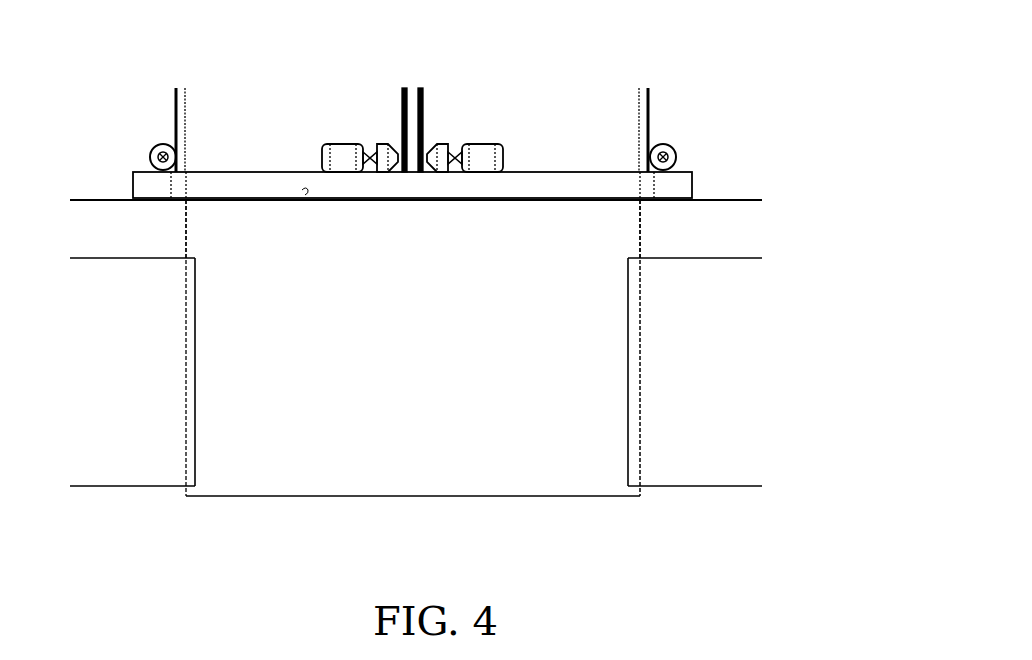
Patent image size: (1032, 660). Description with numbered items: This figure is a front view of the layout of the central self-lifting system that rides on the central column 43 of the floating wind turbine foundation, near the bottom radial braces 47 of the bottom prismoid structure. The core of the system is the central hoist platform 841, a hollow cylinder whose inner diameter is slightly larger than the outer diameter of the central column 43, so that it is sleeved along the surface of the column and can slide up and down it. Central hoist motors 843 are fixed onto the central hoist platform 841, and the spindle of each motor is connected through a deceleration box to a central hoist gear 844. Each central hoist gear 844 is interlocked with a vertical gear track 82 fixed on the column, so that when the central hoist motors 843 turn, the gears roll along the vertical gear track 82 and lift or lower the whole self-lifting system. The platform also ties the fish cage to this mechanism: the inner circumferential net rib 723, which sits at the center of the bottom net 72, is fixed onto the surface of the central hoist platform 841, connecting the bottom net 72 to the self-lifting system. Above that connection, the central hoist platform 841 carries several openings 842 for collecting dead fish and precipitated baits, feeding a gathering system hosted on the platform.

The vertical gear track 82 is at (427, 100).
The central hoist motor 843 is at (503, 147).
The central hoist platform 841 is at (694, 180).
The openings 842 is at (300, 190).
The central hoist gear 844 is at (150, 150).
The bottom net 72 is at (720, 200).
The central column 43 is at (640, 220).
The inner circumferential net rib 723 is at (488, 200).
The bottom radial brace 47 is at (700, 487).